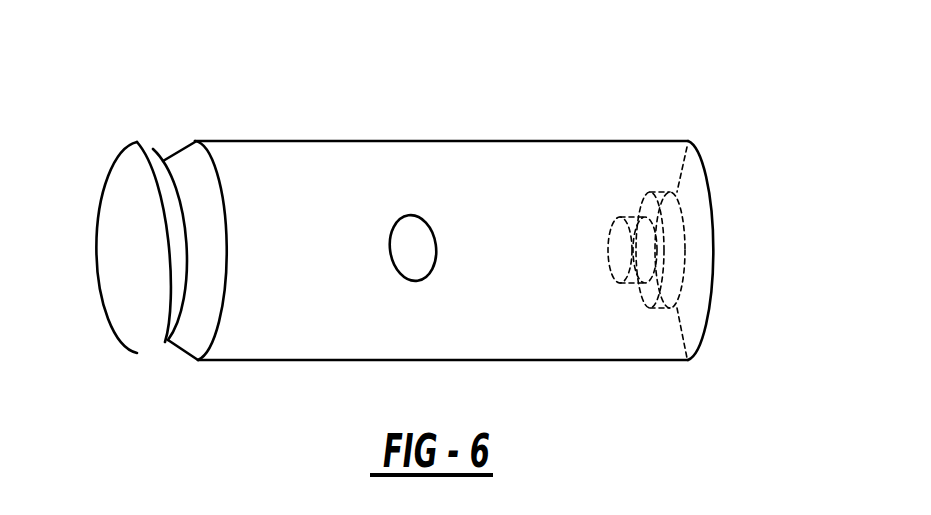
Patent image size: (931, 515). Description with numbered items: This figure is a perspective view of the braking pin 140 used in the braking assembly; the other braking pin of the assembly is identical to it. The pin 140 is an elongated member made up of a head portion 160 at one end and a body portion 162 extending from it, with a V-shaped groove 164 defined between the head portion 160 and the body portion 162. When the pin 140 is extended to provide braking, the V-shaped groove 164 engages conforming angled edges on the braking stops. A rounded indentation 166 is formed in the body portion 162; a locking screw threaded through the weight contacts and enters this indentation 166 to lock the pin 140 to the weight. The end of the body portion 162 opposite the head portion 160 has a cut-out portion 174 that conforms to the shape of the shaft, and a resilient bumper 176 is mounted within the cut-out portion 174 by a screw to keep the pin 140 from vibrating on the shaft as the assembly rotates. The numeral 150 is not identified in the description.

The pin 140 is at (427, 224).
The housing 150 is at (423, 0).
The head portion 160 is at (128, 273).
The body portion 162 is at (262, 335).
The V-shaped groove 164 is at (198, 178).
The rounded indentation 166 is at (417, 241).
The cut-out portion 174 is at (677, 178).
The resilient bumper 176 is at (672, 275).